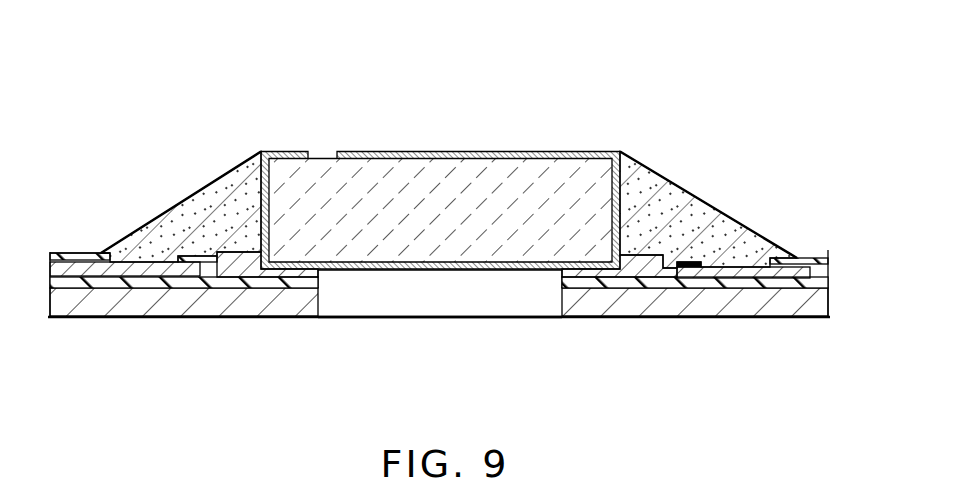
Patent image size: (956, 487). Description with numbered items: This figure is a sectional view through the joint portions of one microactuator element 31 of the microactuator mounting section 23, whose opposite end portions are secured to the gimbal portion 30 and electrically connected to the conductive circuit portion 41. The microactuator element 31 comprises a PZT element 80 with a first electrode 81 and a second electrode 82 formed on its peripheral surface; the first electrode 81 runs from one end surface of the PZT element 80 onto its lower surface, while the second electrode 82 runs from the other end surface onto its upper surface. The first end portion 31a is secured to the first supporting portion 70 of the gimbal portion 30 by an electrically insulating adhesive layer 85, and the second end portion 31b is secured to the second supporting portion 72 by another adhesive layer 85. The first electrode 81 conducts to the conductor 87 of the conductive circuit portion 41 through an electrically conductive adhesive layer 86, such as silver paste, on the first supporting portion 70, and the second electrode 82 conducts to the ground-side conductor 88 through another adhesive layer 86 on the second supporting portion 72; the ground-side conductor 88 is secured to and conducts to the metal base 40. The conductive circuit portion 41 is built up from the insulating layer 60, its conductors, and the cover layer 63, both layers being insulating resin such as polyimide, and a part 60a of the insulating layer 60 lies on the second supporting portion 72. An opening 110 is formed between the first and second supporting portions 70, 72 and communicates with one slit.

The microactuator mounting section 23 is at (449, 157).
The gimbal portion 30 is at (439, 323).
The microactuator element 31 is at (432, 181).
The first end portion 31a is at (273, 200).
The second end portion 31b is at (622, 208).
The metal base 40 is at (439, 324).
The conductive circuit portion 41 is at (95, 226).
The insulating layer 60 is at (68, 288).
The part of the insulating layer 60a is at (737, 288).
The cover layer 63 is at (71, 258).
The first supporting portion 70 is at (203, 307).
The second supporting portion 72 is at (668, 302).
The PZT element 80 is at (423, 203).
The first electrode 81 is at (365, 270).
The second electrode 82 is at (478, 153).
The adhesive layer 85 is at (260, 280).
The electrically conductive adhesive layer 86 is at (197, 205).
The conductor 87 is at (147, 270).
The ground-side conductor 88 is at (752, 262).
The opening 110 is at (428, 326).